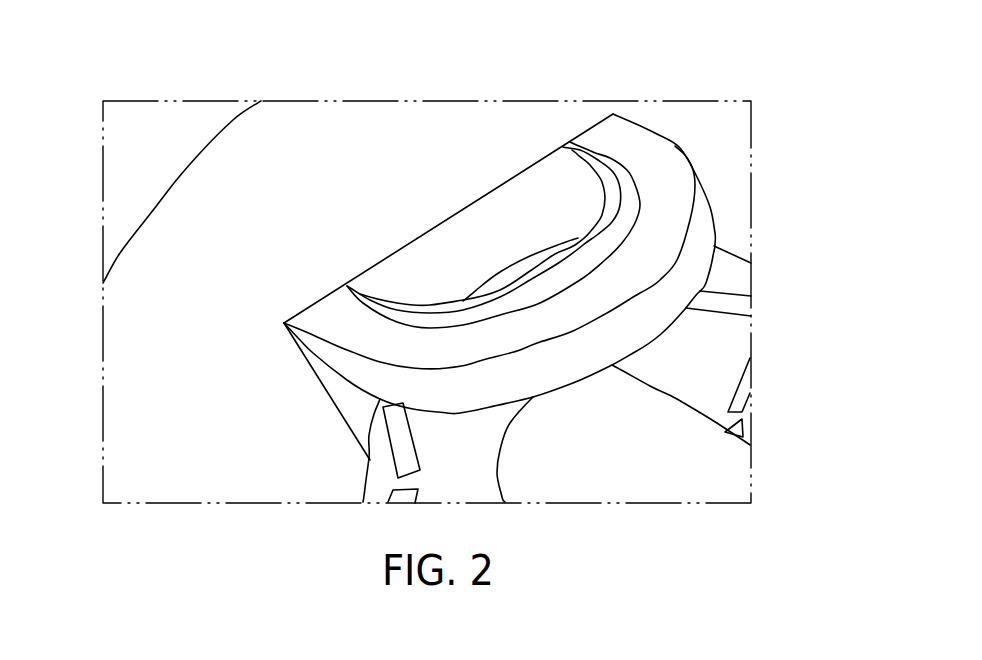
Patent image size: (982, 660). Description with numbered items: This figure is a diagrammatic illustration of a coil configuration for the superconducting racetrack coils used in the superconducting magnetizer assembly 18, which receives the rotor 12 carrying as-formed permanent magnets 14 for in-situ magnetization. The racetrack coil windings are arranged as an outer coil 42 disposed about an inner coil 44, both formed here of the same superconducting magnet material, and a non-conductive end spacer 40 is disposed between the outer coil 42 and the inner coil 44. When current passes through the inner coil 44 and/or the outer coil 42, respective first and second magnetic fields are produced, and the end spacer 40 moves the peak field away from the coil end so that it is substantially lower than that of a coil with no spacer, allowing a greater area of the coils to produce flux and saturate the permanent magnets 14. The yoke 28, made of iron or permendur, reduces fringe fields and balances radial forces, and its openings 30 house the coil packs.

The rotor 12 is at (356, 416).
The permanent magnets 14 is at (732, 302).
The superconducting magnetizer assembly 18 is at (322, 70).
The yoke 28 is at (140, 135).
The openings 30 is at (555, 170).
The non-conductive end spacer 40 is at (625, 192).
The outer coil 42 is at (668, 182).
The inner coil 44 is at (600, 165).